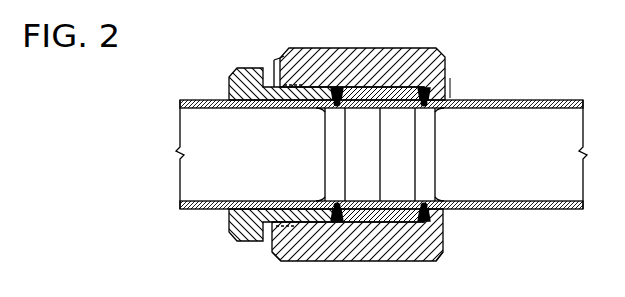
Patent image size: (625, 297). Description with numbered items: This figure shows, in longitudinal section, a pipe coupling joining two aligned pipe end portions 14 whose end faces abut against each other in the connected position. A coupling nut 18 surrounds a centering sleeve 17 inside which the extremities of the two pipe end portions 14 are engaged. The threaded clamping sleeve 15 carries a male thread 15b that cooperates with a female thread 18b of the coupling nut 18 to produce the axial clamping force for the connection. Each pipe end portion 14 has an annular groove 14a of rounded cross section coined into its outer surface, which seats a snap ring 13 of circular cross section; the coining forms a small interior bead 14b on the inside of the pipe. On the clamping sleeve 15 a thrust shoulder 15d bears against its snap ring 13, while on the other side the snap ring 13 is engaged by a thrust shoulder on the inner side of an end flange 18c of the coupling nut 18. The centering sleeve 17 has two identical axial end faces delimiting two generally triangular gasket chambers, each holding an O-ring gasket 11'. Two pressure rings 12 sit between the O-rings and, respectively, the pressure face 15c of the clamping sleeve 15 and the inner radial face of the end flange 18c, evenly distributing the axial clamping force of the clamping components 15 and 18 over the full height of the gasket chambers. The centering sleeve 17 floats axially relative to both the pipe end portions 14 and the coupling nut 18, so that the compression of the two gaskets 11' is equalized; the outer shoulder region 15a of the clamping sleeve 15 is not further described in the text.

The gasket 11' is at (380, 57).
The pressure ring 12 is at (329, 57).
The snap ring 13 is at (275, 60).
The pipe end portion 14 is at (346, 129).
The annular groove 14a is at (328, 113).
The interior bead 14b is at (338, 155).
The threaded clamping sleeve 15 is at (245, 171).
The body flange upper portion 15a is at (240, 81).
The male thread 15b is at (266, 246).
The pressure face 15c is at (343, 224).
The thrust shoulder 15d is at (312, 252).
The centering sleeve 17 is at (367, 224).
The coupling nut 18 is at (386, 252).
The female thread 18b is at (274, 60).
The end flange 18c is at (438, 219).